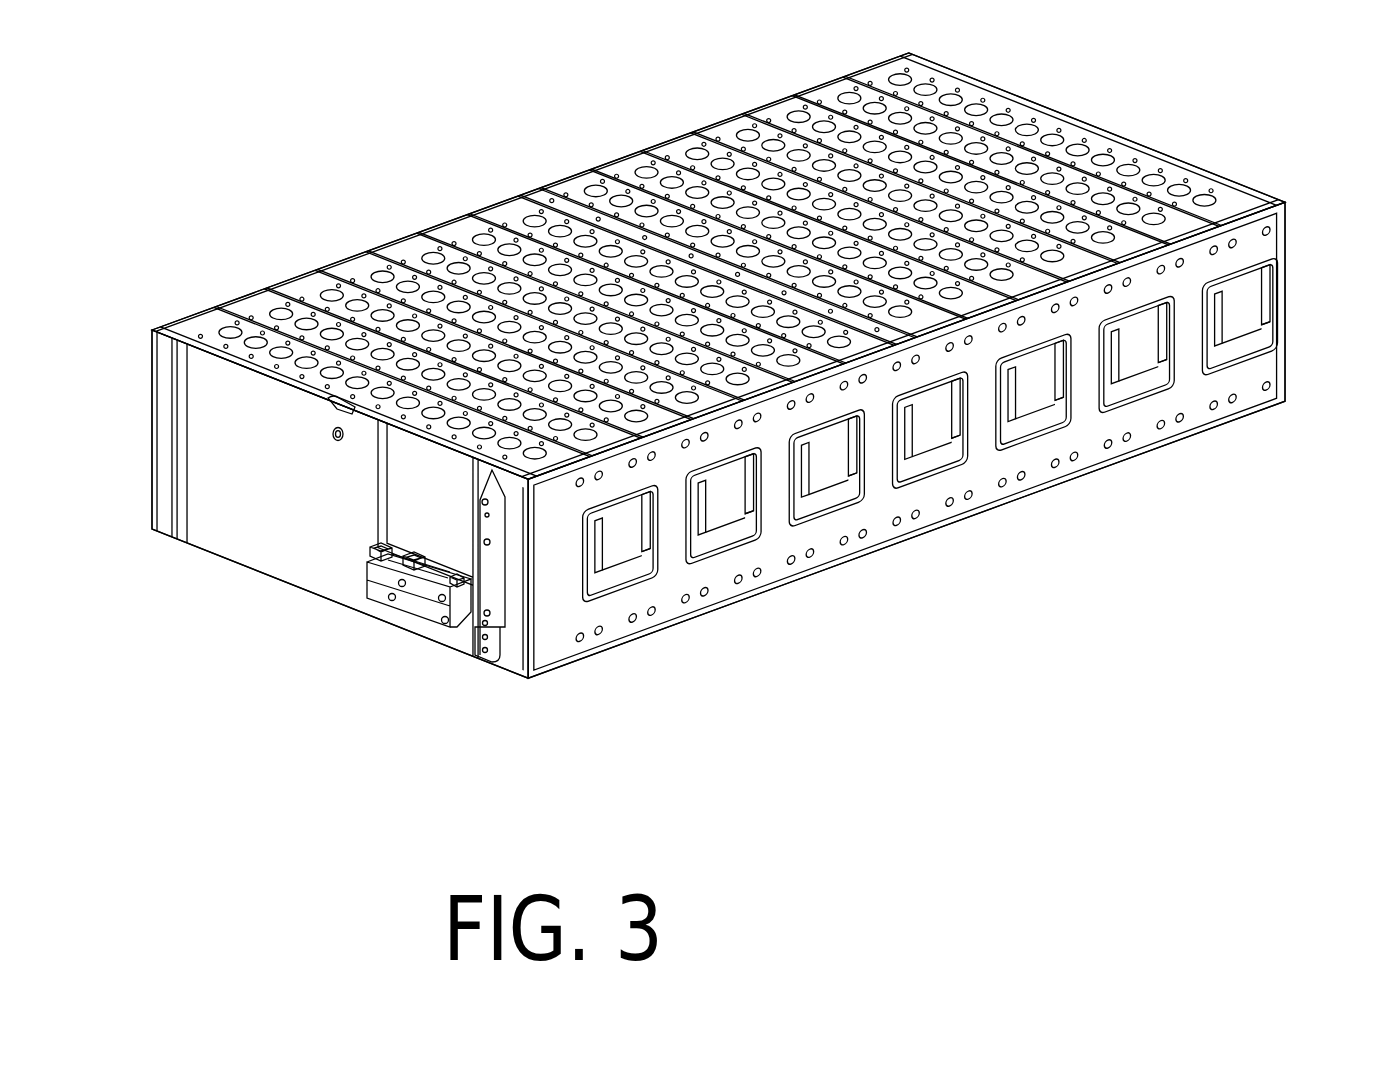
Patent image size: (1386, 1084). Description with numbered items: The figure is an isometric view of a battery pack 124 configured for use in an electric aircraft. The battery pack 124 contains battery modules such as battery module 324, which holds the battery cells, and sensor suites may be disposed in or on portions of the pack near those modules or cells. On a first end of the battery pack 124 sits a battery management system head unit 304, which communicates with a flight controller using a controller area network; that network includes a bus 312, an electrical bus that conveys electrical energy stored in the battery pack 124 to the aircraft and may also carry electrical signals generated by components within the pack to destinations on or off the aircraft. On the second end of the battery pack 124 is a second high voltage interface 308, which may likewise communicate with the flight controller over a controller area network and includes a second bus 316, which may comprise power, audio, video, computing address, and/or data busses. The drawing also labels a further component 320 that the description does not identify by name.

The battery pack 124 is at (285, 776).
The battery management system head unit 304 is at (368, 573).
The second high voltage interface 308 is at (1235, 178).
The bus 312 is at (427, 583).
The second bus 316 is at (642, 239).
The busbar strip 320 is at (613, 173).
The battery module 324 is at (362, 270).